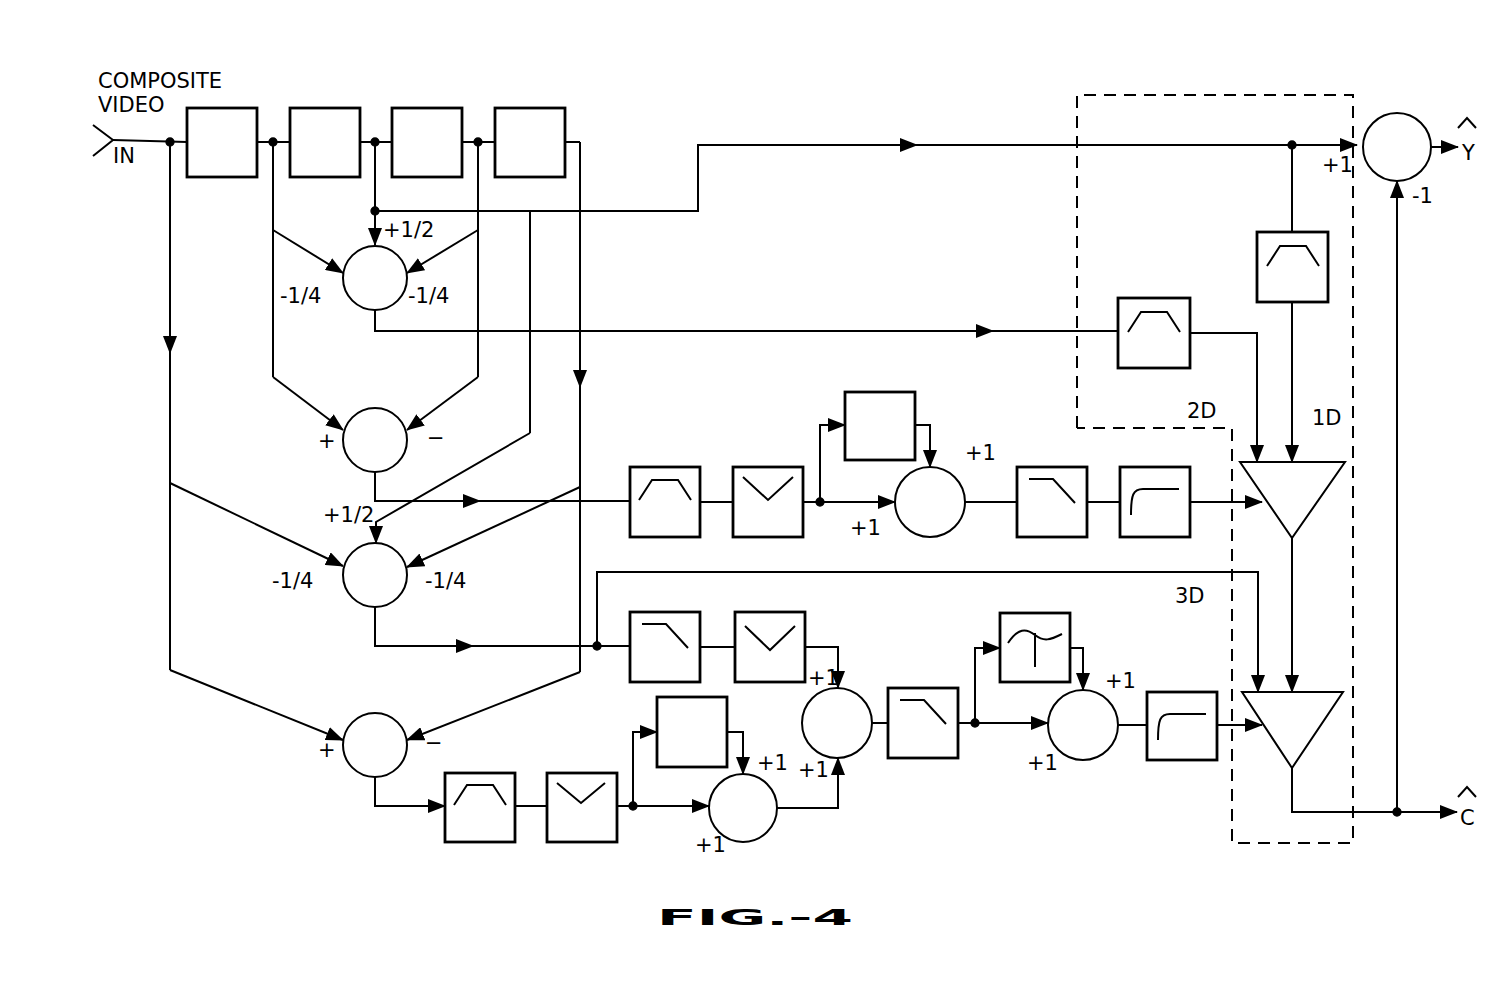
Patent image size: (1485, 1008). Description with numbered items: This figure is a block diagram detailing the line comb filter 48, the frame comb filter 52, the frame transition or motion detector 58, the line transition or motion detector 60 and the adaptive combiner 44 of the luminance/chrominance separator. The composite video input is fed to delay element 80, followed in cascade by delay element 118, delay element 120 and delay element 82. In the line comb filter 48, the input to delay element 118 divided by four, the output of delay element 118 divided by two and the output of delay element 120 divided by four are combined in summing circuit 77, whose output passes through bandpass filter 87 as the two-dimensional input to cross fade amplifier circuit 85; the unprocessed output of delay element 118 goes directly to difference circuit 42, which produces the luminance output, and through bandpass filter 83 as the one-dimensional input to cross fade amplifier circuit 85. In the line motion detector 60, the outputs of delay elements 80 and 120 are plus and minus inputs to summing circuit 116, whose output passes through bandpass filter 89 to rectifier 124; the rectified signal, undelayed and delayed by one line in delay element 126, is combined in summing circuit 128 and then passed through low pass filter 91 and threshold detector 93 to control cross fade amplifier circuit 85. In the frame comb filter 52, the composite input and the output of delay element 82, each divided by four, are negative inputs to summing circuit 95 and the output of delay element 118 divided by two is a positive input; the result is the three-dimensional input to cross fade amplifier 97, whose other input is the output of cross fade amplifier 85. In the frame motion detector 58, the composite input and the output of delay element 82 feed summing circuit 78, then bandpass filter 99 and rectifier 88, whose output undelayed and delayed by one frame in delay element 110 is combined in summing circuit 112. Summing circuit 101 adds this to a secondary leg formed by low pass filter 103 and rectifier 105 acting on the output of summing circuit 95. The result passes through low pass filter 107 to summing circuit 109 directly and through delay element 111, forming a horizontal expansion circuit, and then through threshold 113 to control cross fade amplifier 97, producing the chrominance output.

The difference circuit 42 is at (1393, 112).
The adaptive combiner 44 is at (1077, 247).
The line comb filter 48 is at (347, 323).
The frame comb filter 52 is at (337, 613).
The frame transition or motion detector 58 is at (350, 695).
The line transition or motion detector 60 is at (300, 428).
The summing circuit 77 is at (410, 305).
The summing circuit 78 is at (360, 777).
The delay element 80 is at (242, 108).
The delay element 82 is at (525, 108).
The bandpass filter 83 is at (1277, 232).
The cross fade amplifier circuit 85 is at (1313, 500).
The bandpass filter 87 is at (1140, 298).
The rectifier 88 is at (580, 773).
The bandpass filter 89 is at (657, 467).
The low pass filter 91 is at (1063, 467).
The threshold detector 93 is at (1167, 537).
The summing circuit 95 is at (407, 597).
The cross fade amplifier 97 is at (1317, 692).
The bandpass filter 99 is at (480, 773).
The summing circuit 101 is at (847, 690).
The low pass filter 103 is at (657, 612).
The rectifier 105 is at (763, 612).
The low pass filter 107 is at (913, 688).
The summing circuit 109 is at (1075, 760).
The 1F delay element 110 is at (727, 715).
The delay element 111 is at (1030, 613).
The summing circuit 112 is at (778, 818).
The threshold 113 is at (1207, 692).
The summing circuit 116 is at (343, 457).
The delay element 118 is at (318, 108).
The delay element 120 is at (422, 108).
The rectifier 124 is at (767, 467).
The 1H delay element 126 is at (870, 392).
The summing circuit 128 is at (948, 537).